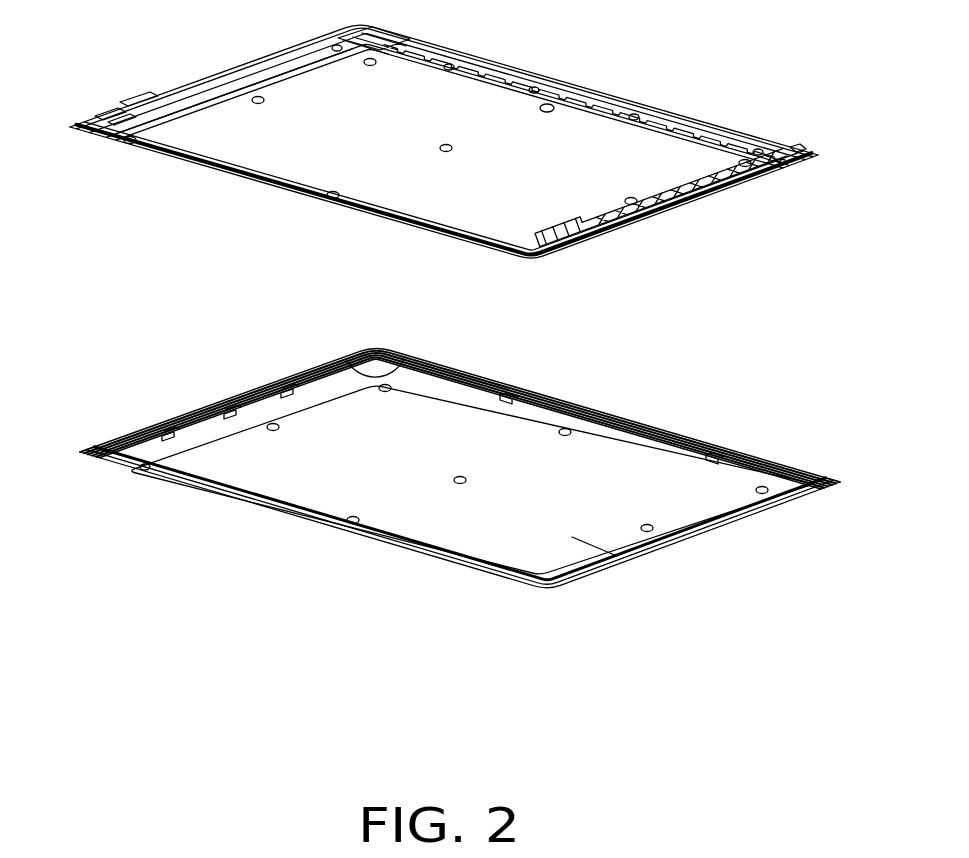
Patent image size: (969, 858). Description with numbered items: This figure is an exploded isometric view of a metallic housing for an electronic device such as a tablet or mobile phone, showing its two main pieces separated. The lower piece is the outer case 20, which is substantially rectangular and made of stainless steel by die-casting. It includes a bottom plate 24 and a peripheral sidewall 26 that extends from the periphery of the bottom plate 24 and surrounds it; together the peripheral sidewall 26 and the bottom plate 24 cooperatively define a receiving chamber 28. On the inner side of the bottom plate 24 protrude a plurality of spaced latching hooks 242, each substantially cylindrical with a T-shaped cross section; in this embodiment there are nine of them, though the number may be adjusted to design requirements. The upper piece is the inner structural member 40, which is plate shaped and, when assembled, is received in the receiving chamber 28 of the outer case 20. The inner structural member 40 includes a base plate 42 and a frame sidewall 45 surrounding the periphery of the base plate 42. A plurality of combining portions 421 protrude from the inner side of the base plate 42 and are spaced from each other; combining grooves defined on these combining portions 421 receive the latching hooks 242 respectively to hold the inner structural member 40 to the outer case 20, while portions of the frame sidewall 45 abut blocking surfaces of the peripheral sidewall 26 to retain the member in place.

The outer case 20 is at (460, 503).
The bottom plate 24 is at (475, 473).
The latching hook 242 is at (566, 428).
The peripheral sidewall 26 is at (672, 440).
The receiving chamber 28 is at (627, 563).
The inner structural member 40 is at (237, 52).
The base plate 42 is at (383, 185).
The combining portion 421 is at (548, 106).
The frame sidewall 45 is at (143, 153).